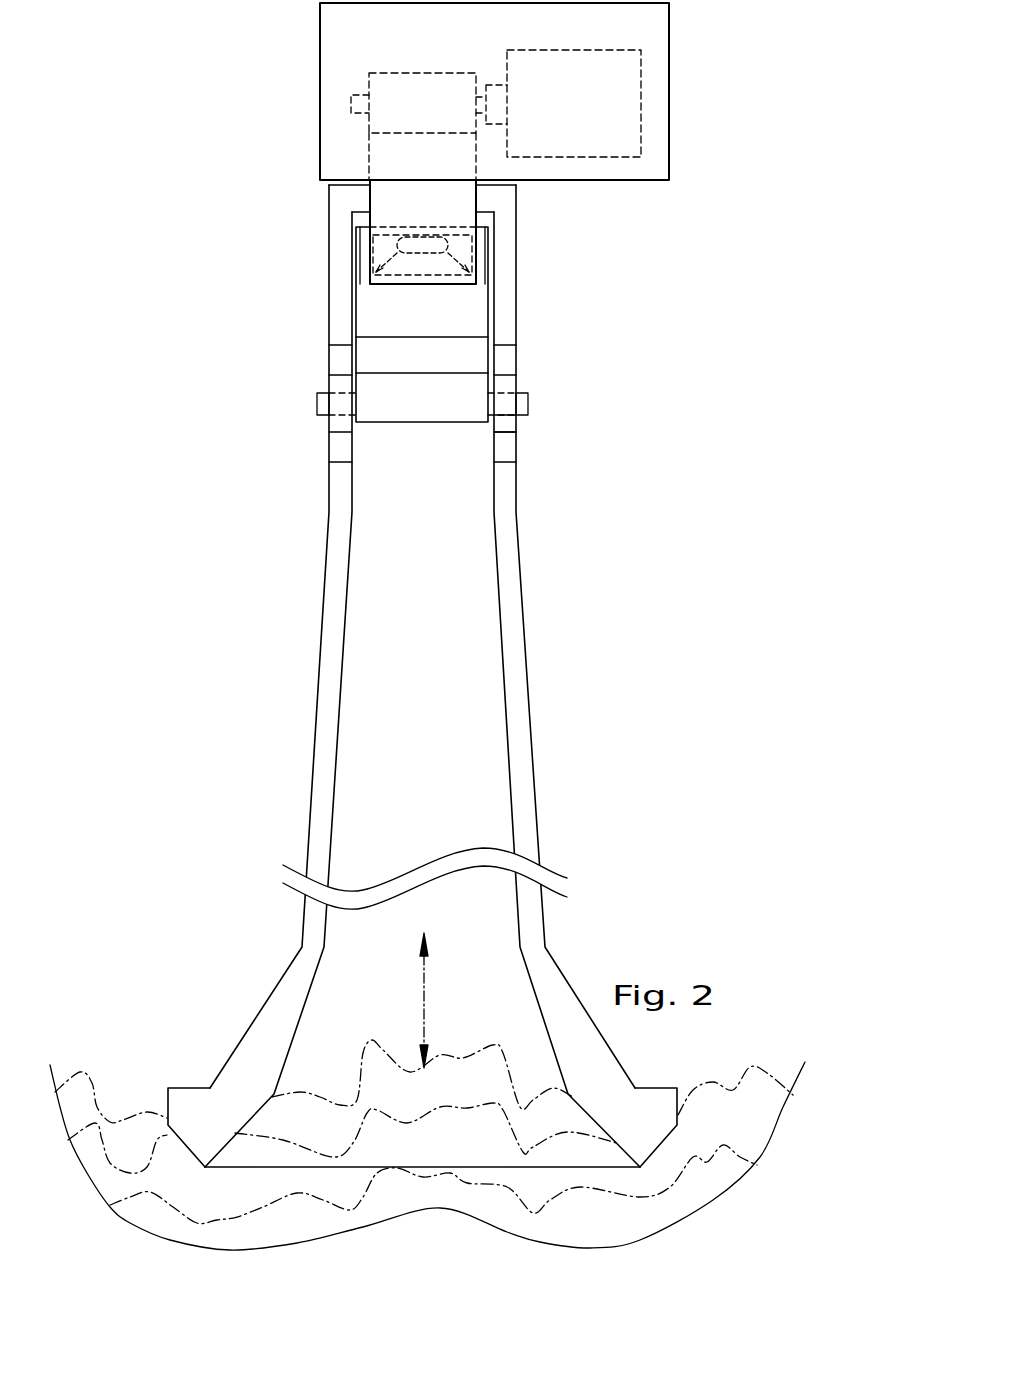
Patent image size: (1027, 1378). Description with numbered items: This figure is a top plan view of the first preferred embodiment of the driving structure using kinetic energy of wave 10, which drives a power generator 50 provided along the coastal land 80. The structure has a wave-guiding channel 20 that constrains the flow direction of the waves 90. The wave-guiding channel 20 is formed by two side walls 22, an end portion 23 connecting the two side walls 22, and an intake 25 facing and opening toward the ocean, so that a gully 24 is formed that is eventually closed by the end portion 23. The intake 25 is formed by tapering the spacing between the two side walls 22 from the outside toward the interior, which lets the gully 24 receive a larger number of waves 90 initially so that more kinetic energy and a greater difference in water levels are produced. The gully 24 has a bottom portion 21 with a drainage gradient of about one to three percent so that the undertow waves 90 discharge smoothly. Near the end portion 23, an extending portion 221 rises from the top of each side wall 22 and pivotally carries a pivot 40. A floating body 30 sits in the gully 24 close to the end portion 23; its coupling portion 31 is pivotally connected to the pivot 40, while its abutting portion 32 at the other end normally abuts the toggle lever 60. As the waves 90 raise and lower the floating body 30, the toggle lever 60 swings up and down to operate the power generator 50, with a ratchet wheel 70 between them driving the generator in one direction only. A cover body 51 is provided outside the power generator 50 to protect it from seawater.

The driving structure using kinetic energy of wave 10 is at (249, 554).
The wave-guiding channel 20 is at (422, 723).
The bottom portion 21 is at (455, 730).
The side walls 22 is at (515, 648).
The extending portion 221 is at (508, 427).
The end portion 23 is at (368, 203).
The gully 24 is at (427, 676).
The intake 25 is at (428, 1155).
The floating body 30 is at (354, 320).
The coupling portion 31 is at (372, 372).
The abutting portion 32 is at (445, 240).
The pivot 40 is at (528, 405).
The power generator 50 is at (641, 107).
The cover body 51 is at (320, 92).
The toggle lever 60 is at (470, 198).
The ratchet wheel 70 is at (500, 82).
The coastal land 80 is at (674, 311).
The waves 90 is at (343, 1105).